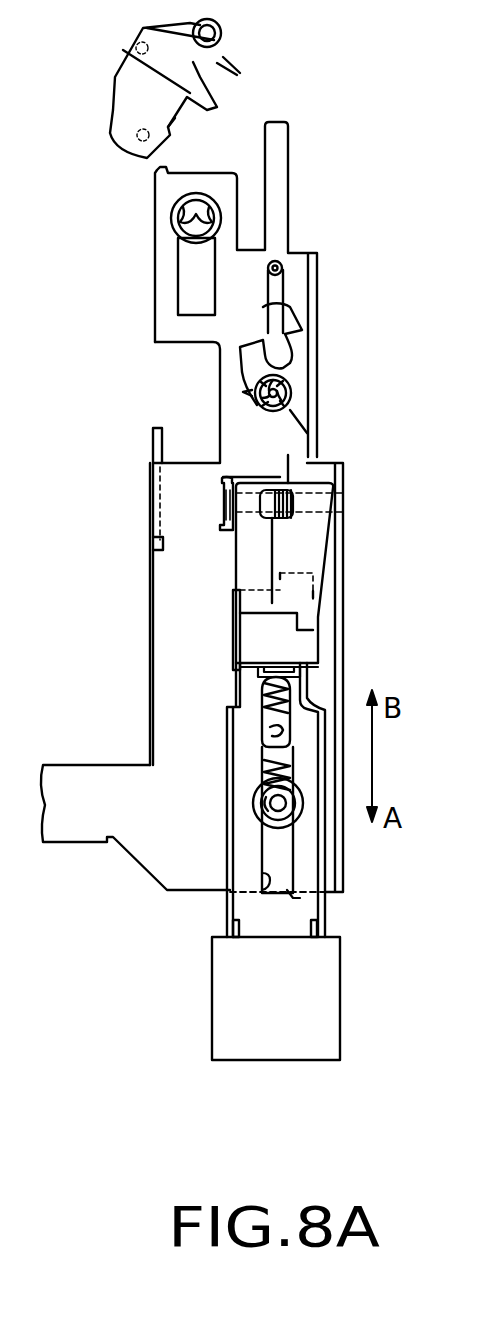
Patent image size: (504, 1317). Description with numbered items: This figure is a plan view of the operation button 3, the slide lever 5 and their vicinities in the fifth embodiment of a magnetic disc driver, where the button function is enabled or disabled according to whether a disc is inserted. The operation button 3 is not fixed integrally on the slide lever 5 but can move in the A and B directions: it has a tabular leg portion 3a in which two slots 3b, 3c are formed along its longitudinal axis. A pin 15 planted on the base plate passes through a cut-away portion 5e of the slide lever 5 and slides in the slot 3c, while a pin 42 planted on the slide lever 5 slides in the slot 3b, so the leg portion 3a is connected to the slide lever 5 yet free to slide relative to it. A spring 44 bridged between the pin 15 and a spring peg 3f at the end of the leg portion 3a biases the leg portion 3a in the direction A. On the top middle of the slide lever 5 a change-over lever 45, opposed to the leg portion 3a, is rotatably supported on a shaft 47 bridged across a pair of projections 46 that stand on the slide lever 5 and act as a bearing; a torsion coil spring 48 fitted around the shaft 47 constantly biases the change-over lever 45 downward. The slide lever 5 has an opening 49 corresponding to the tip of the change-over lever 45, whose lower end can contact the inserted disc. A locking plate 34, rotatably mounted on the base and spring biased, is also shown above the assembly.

The locking plate 34 is at (113, 112).
The projections 46 is at (228, 477).
The shaft 47 is at (223, 512).
The torsion coil spring 48 is at (340, 508).
The change-over lever 45 is at (240, 557).
The opening 49 is at (233, 627).
The spring peg 3f is at (258, 678).
The slide lever 5 is at (342, 578).
The pin 42 is at (292, 690).
The slot 3b is at (290, 727).
The spring 44 is at (277, 775).
The pin 15 is at (262, 810).
The leg portion 3a is at (240, 857).
The cut-away portion 5e is at (262, 890).
The slot 3c is at (290, 897).
The operation button 3 is at (330, 1005).